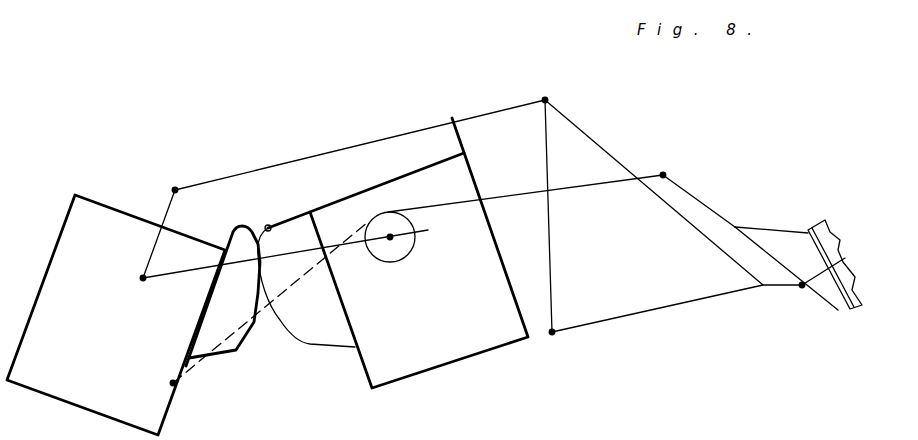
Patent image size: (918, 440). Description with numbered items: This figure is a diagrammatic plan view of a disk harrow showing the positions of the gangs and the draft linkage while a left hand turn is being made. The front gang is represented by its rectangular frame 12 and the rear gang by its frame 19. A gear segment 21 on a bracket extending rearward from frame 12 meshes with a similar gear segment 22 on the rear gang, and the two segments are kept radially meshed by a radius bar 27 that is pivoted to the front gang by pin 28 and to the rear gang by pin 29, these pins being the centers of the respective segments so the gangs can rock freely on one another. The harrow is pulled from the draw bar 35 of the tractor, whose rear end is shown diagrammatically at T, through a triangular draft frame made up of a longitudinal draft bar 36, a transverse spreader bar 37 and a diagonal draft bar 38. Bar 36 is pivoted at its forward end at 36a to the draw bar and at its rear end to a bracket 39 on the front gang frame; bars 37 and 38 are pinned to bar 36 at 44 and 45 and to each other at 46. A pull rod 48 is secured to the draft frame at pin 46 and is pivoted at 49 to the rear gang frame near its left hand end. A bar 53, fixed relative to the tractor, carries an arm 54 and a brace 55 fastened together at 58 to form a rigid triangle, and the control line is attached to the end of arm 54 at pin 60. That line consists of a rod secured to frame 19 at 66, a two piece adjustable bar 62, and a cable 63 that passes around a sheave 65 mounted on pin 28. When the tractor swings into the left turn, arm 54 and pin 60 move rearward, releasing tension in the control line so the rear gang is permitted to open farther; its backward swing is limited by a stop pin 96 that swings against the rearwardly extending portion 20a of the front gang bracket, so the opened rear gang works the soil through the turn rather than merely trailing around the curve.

The rectangular frame 12 is at (478, 357).
The frame 19 is at (72, 403).
The rearwardly extending portion of the bracket 20a is at (297, 212).
The gear segment 21 is at (285, 322).
The gear segment 22 is at (251, 224).
The radius bar 27 is at (185, 271).
The pin 28 is at (417, 231).
The pin 29 is at (143, 278).
The draw bar 35 is at (825, 274).
The longitudinal draft bar 36 is at (683, 306).
The pivot 36a is at (800, 287).
The transverse spreader bar 37 is at (551, 240).
The diagonal draft bar 38 is at (654, 192).
The bracket 39 is at (543, 337).
The pin 44 is at (553, 332).
The pin 45 is at (762, 290).
The pin 46 is at (545, 100).
The pull rod 48 is at (341, 149).
The pivot 49 is at (175, 190).
The bar 53 is at (840, 296).
The arm 54 is at (786, 268).
The brace 55 is at (773, 230).
The pin 58 is at (736, 226).
The pin 60 is at (665, 173).
The bar 62 is at (591, 185).
The cable 63 is at (287, 290).
The sheave 65 is at (398, 261).
The attachment point 66 is at (173, 383).
The stop pin 96 is at (270, 224).
The tractor T is at (827, 233).